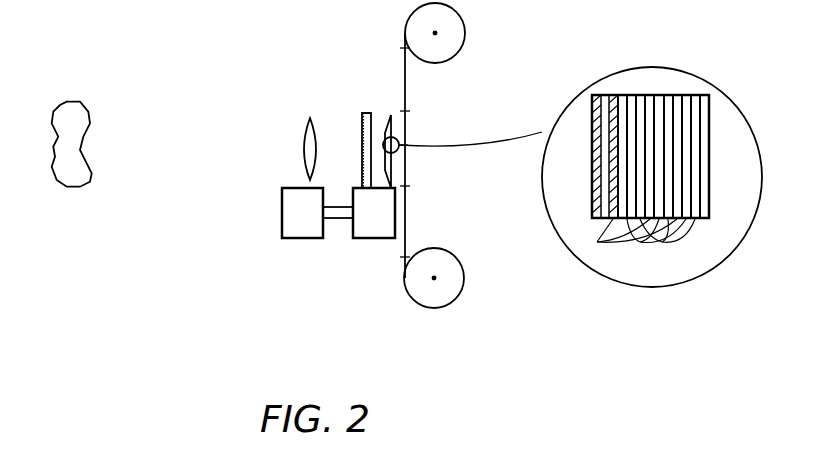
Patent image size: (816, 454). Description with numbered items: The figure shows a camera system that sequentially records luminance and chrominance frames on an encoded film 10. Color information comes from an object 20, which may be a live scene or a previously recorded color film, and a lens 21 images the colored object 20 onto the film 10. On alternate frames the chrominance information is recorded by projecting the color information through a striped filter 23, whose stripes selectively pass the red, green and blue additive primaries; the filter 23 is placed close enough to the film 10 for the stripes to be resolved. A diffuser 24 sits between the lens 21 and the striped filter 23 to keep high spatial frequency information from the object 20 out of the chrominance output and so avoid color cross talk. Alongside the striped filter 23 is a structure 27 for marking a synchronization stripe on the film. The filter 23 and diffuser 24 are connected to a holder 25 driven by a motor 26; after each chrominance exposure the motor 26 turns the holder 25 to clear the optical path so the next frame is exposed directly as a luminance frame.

The encoded film 10 is at (408, 78).
The object 20 is at (73, 99).
The lens 21 is at (300, 128).
The striped filter 23 is at (391, 115).
The diffuser 24 is at (362, 112).
The holder 25 is at (374, 213).
The motor 26 is at (317, 213).
The structure for marking the synchronization stripe 27 is at (593, 131).